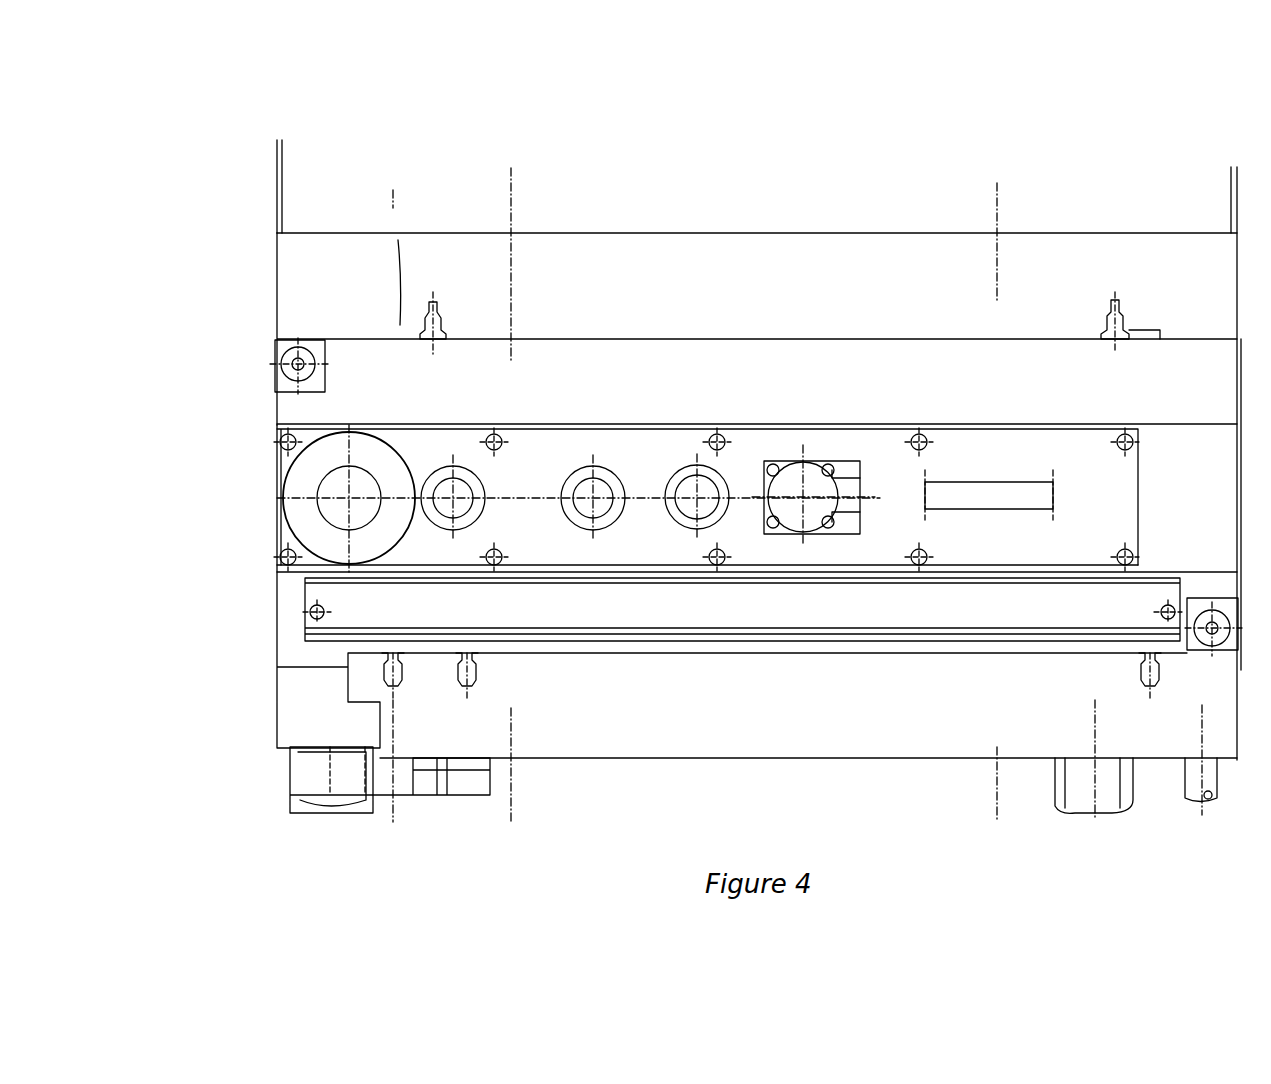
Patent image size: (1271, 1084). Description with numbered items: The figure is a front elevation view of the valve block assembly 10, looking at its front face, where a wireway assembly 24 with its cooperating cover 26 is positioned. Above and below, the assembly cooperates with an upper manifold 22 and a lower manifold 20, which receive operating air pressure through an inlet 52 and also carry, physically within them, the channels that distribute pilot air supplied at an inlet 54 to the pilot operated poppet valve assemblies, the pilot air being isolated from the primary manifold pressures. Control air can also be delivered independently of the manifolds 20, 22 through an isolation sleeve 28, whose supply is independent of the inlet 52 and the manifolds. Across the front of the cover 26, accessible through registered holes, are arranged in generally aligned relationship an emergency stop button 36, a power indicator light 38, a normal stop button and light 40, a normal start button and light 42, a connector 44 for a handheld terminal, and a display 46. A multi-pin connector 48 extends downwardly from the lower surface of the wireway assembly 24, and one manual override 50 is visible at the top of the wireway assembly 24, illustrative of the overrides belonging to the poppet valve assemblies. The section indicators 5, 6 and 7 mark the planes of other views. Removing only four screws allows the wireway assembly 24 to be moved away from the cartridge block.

The valve block assembly 10 is at (1108, 114).
The lower manifold 20 is at (678, 760).
The upper manifold 22 is at (662, 233).
The wireway assembly 24 is at (274, 510).
The cover 26 is at (610, 339).
The isolation sleeve 28 is at (495, 782).
The emergency stop button 36 is at (392, 430).
The power indicator light 38 is at (438, 465).
The normal stop button and light 40 is at (573, 465).
The normal start button and light 42 is at (680, 470).
The connector 44 is at (787, 465).
The display 46 is at (965, 482).
The multi-pin connector 48 is at (315, 790).
The manual override 50 is at (438, 318).
The inlet 52 is at (1108, 818).
The inlet 54 is at (1200, 792).
The section line 5 is at (387, 844).
The section line 6 is at (505, 836).
The section line 7 is at (1008, 826).